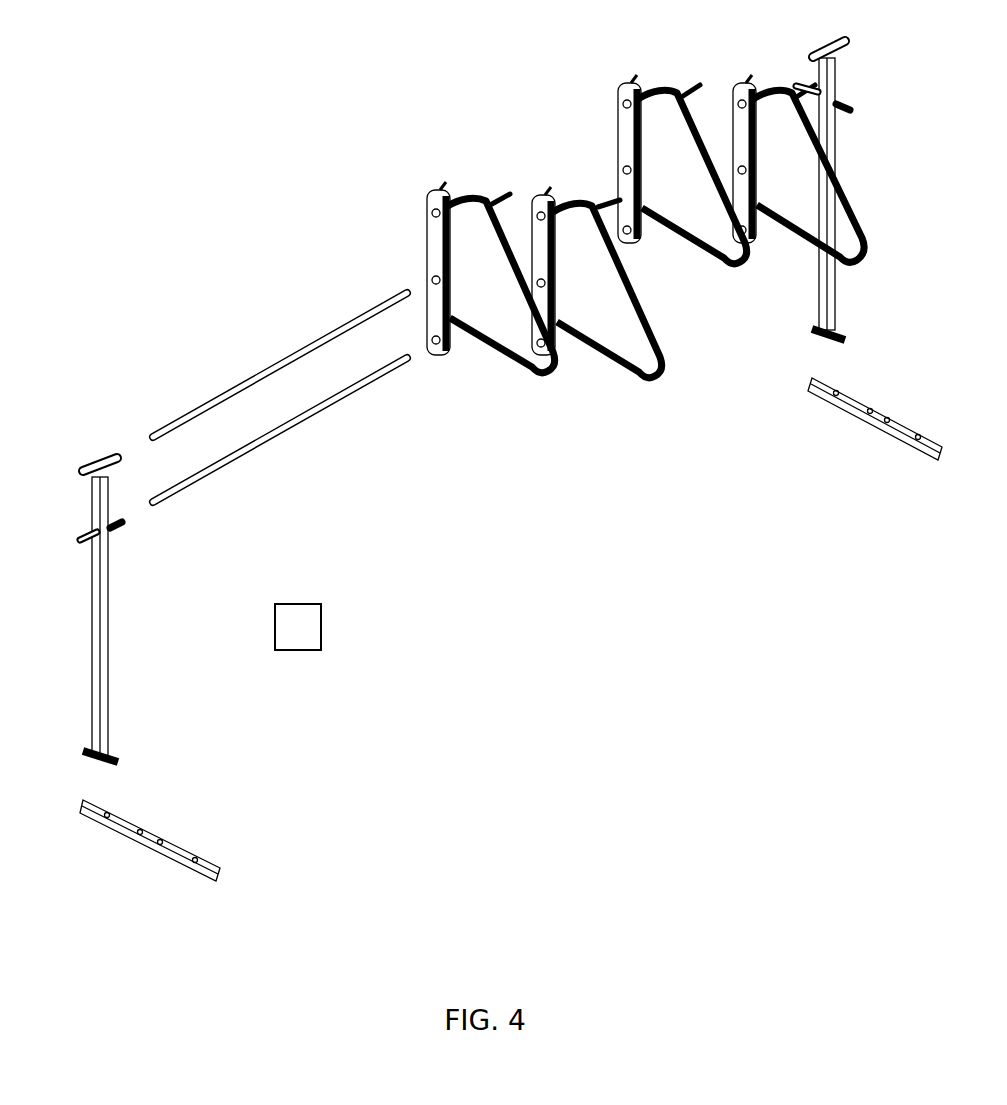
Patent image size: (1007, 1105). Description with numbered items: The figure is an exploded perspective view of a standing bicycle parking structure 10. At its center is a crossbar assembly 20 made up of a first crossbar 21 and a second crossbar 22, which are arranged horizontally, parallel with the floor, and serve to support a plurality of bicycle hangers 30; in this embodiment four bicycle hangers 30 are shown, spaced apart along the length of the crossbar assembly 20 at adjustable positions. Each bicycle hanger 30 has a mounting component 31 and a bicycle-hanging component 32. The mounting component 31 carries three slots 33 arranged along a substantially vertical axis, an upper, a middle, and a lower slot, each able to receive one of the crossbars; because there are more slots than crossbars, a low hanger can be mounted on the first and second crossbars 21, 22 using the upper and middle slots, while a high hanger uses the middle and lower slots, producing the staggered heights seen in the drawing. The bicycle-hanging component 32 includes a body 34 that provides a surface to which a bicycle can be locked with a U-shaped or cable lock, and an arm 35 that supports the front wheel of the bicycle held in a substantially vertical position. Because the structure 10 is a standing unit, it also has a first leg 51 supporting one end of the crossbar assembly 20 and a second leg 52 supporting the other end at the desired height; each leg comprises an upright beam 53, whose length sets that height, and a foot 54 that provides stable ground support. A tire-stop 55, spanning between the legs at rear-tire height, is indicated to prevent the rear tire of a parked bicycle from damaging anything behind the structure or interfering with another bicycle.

The bicycle parking structure 10 is at (305, 77).
The crossbar assembly 20 is at (366, 521).
The first crossbar 21 is at (275, 367).
The second crossbar 22 is at (283, 427).
The bicycle hanger 30 is at (718, 446).
The mounting component 31 is at (435, 246).
The bicycle-hanging component 32 is at (515, 372).
The slots 33 is at (622, 98).
The body 34 is at (712, 260).
The arm 35 is at (690, 88).
The first leg 51 is at (100, 516).
The second leg 52 is at (836, 88).
The upright beam 53 is at (102, 675).
The foot 54 is at (172, 852).
The tire-stop 55 is at (298, 627).